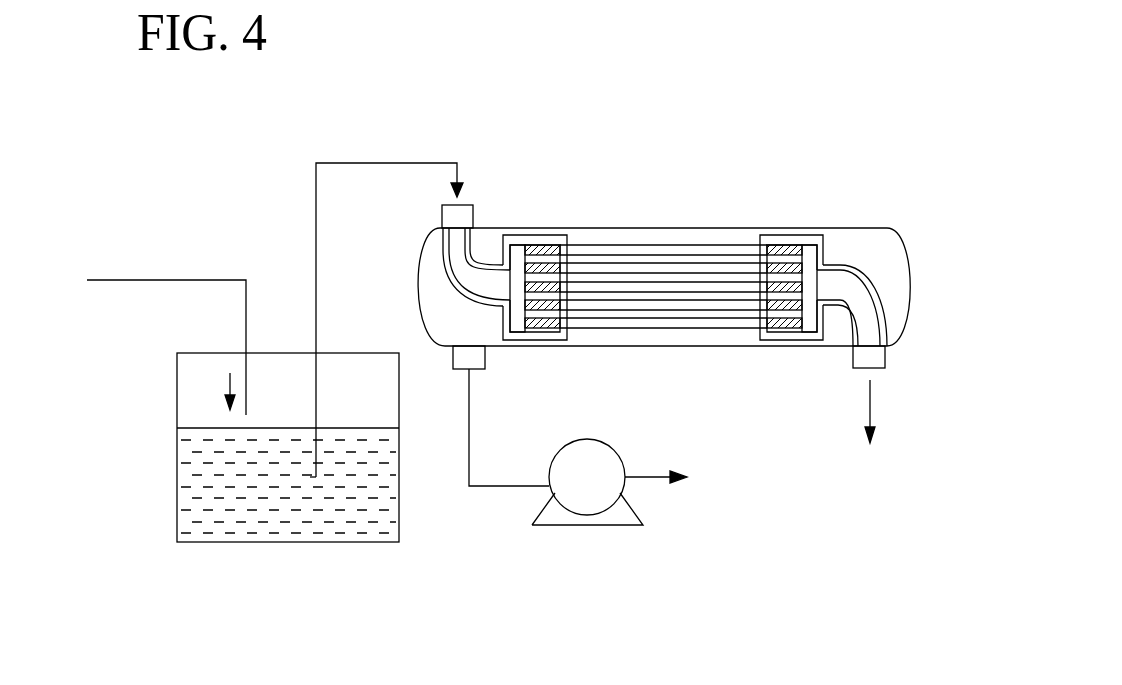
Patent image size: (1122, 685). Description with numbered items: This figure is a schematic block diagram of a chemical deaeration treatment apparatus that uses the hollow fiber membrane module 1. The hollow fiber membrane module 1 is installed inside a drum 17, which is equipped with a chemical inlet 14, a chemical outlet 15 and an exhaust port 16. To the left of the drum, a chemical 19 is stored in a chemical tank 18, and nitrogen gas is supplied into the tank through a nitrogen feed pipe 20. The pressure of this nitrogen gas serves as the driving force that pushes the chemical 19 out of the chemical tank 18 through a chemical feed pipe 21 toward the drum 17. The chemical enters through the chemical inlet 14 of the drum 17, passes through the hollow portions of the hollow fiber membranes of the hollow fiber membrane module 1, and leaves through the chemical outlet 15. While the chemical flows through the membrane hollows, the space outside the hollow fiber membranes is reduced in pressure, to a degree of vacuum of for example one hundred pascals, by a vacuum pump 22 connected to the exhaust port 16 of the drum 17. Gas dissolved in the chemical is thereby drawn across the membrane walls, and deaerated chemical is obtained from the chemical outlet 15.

The hollow fiber membrane module 1 is at (660, 243).
The chemical inlet 14 is at (470, 204).
The chemical outlet 15 is at (878, 369).
The exhaust port 16 is at (487, 368).
The drum 17 is at (700, 228).
The chemical tank 18 is at (289, 543).
The chemical 19 is at (247, 498).
The nitrogen feed pipe 20 is at (172, 279).
The chemical feed pipe 21 is at (395, 160).
The vacuum pump 22 is at (570, 525).